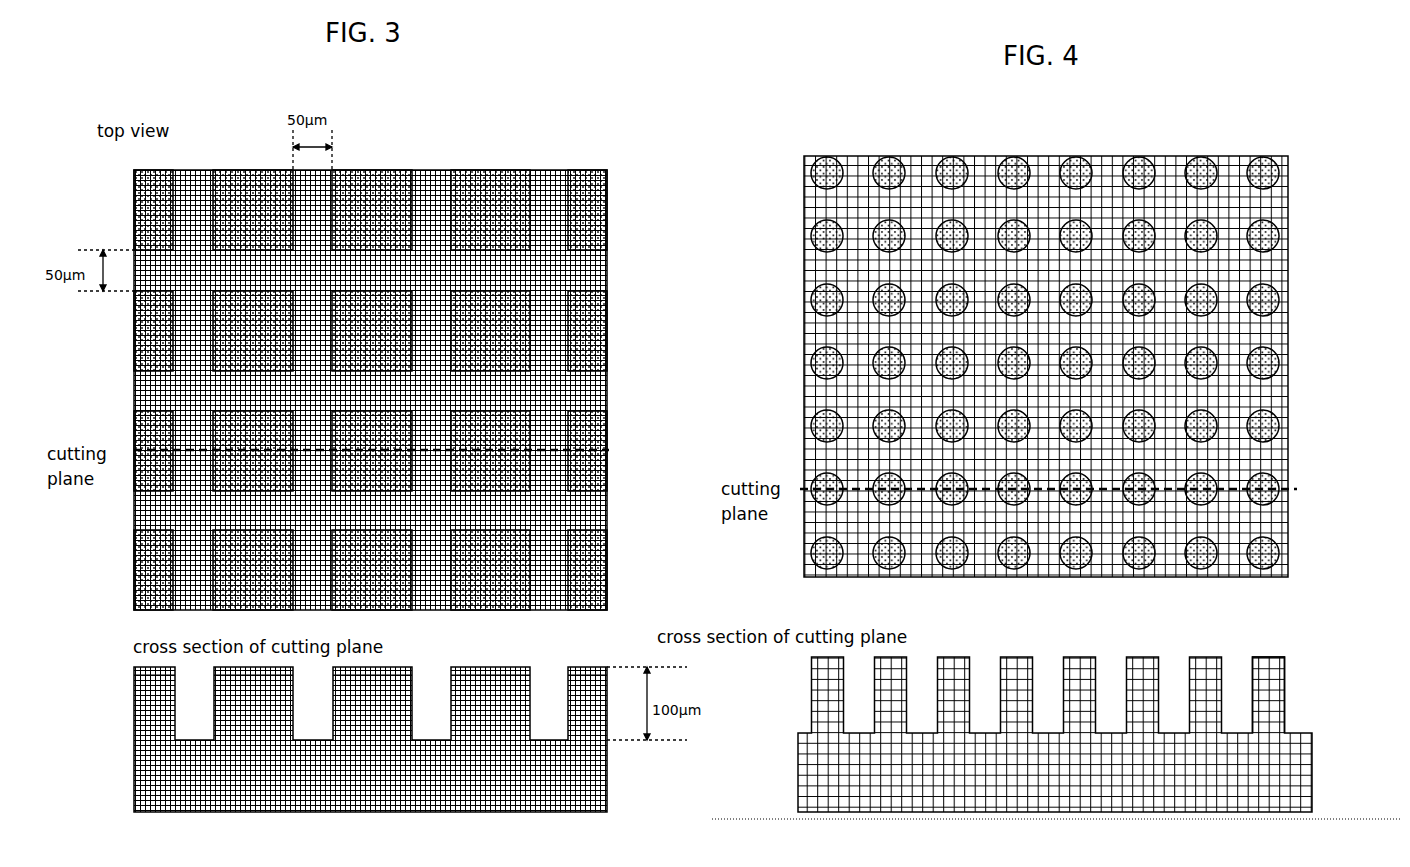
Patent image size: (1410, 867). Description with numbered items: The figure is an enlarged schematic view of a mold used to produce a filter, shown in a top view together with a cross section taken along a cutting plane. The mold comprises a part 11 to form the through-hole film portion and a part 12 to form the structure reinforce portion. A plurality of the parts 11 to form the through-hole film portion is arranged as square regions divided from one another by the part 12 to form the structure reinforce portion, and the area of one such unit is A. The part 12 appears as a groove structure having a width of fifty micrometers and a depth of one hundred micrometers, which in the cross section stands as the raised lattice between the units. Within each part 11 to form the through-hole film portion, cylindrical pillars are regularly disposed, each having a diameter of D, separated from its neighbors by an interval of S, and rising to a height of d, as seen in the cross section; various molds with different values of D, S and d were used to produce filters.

In FIG. 3, the part to form the through-hole film portion 11 is at (585, 668).
In FIG. 3, the part to form the structure reinforce portion 12 is at (552, 218).
In FIG. 3, the area of a unit A is at (489, 197).
In FIG. 4, the diameter of the cylindrical pillars D is at (968, 657).
In FIG. 4, the interval of the cylindrical pillars S is at (1122, 657).
In FIG. 4, the height of the cylindrical pillars d is at (1285, 657).